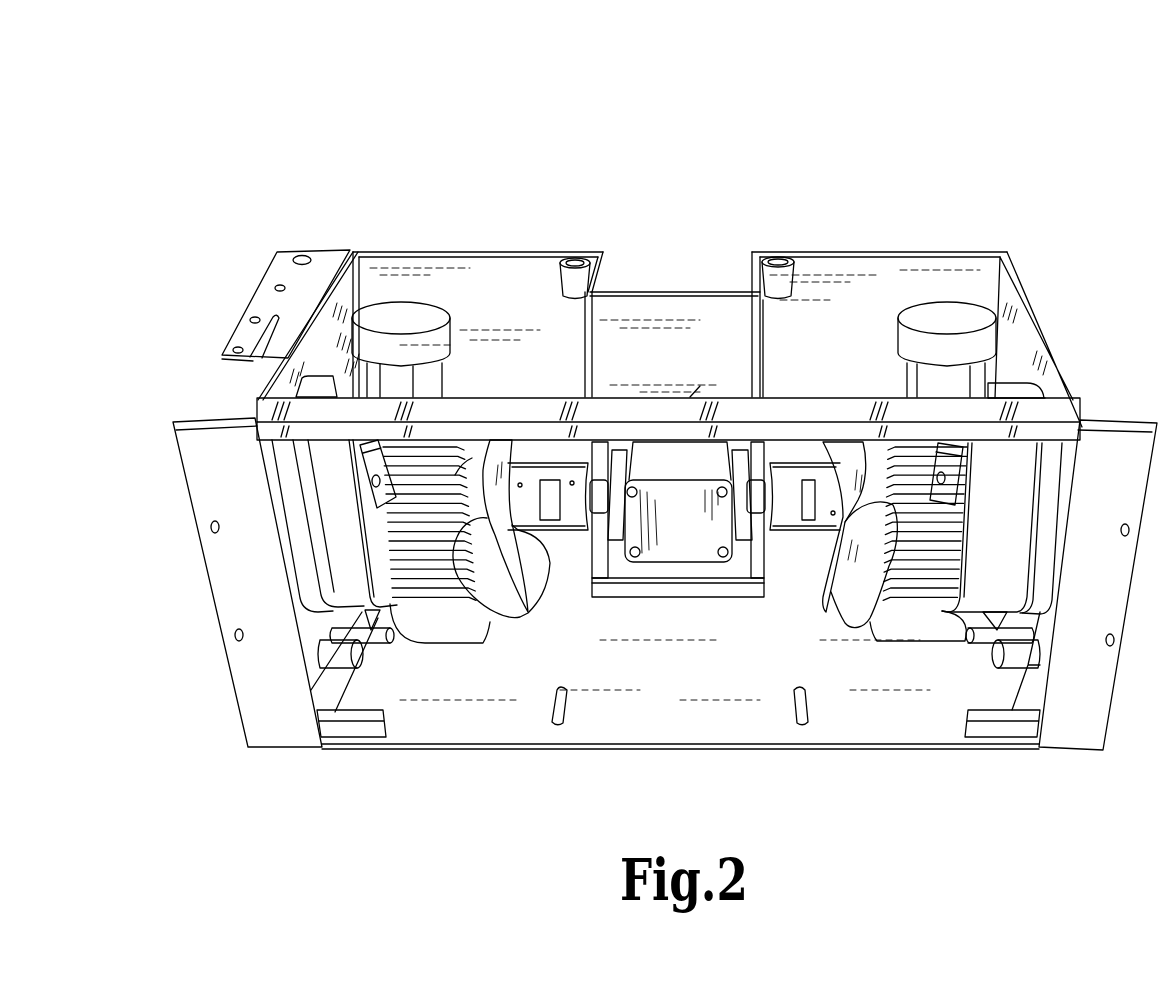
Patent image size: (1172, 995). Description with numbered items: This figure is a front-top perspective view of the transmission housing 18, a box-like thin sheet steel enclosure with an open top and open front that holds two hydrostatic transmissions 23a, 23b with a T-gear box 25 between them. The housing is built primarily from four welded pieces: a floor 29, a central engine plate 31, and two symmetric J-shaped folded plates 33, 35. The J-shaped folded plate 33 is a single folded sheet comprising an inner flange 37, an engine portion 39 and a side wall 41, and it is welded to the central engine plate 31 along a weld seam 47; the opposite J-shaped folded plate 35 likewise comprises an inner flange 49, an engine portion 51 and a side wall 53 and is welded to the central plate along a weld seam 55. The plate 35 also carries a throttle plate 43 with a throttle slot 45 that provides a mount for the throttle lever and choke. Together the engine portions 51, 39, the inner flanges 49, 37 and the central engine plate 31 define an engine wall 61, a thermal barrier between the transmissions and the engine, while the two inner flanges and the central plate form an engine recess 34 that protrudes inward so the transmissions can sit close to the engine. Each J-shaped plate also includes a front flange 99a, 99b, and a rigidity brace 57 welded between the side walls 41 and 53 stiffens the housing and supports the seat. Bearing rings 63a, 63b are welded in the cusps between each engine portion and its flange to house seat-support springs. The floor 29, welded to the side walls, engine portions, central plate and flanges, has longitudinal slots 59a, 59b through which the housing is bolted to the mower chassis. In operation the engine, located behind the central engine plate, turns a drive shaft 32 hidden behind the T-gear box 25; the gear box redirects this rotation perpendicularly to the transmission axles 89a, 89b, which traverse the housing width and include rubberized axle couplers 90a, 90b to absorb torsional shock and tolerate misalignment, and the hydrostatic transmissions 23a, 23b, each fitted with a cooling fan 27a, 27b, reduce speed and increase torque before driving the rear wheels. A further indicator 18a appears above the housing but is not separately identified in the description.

The transmission housing 18 is at (880, 242).
The generator assembly direction 18a is at (860, 188).
The hydrostatic transmission 23a is at (984, 549).
The hydrostatic transmission 23b is at (314, 544).
The T-gear box 25 is at (665, 532).
The cooling fan 27a is at (827, 607).
The cooling fan 27b is at (530, 610).
The floor 29 is at (666, 682).
The central engine plate 31 is at (656, 364).
The drive shaft 32 is at (694, 396).
The J-shaped folded plate 33 is at (937, 253).
The engine recess 34 is at (672, 284).
The J-shaped folded plate 35 is at (412, 250).
The inner flange 37 is at (749, 275).
The engine portion 39 is at (849, 319).
The side wall 41 is at (1000, 359).
The throttle plate 43 is at (285, 312).
The throttle slot 45 is at (243, 366).
The weld seam 47 is at (763, 345).
The inner flange 49 is at (605, 275).
The engine portion 51 is at (471, 312).
The side wall 53 is at (317, 357).
The weld seam 55 is at (585, 347).
The rigidity brace 57 is at (661, 424).
The slot 59a is at (801, 725).
The slot 59b is at (568, 725).
The engine wall 61 is at (466, 247).
The bearing ring 63a is at (806, 260).
The bearing ring 63b is at (560, 258).
The transmission axle 89a is at (755, 500).
The transmission axle 89b is at (605, 500).
The axle coupler 90a is at (782, 506).
The axle coupler 90b is at (541, 514).
The front flange 99a is at (1079, 592).
The front flange 99b is at (224, 592).